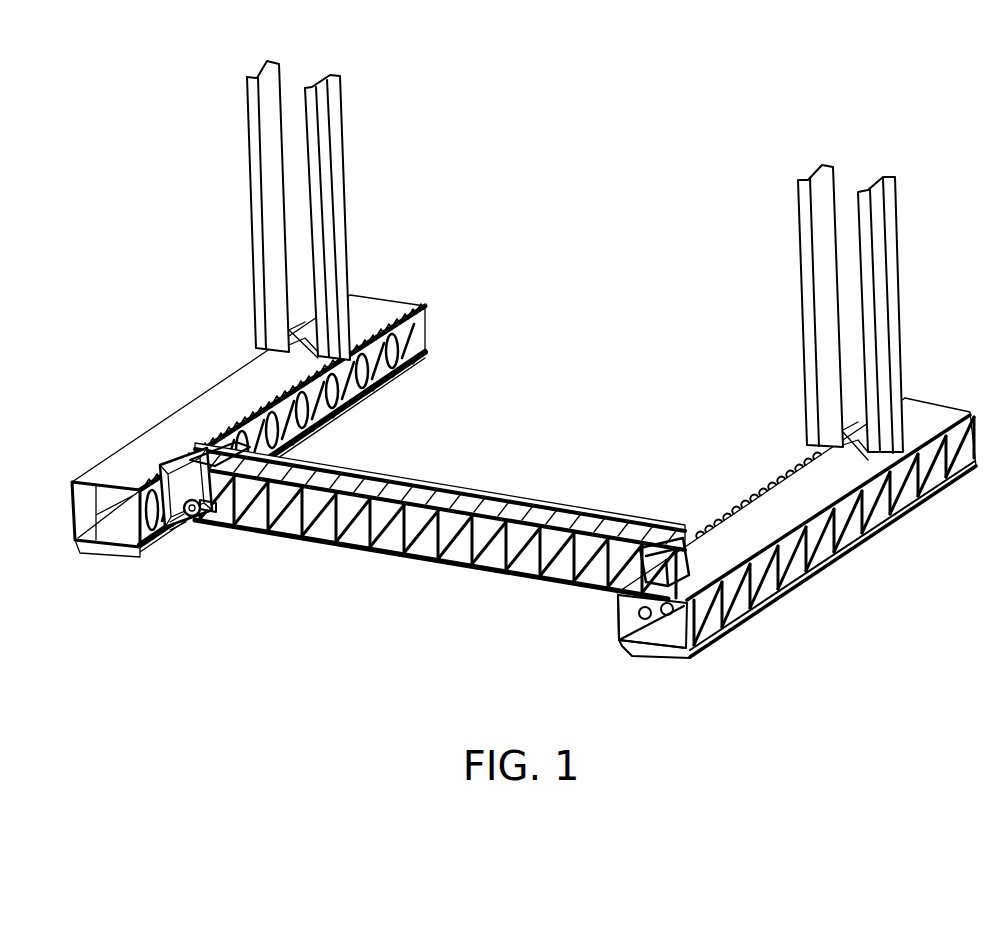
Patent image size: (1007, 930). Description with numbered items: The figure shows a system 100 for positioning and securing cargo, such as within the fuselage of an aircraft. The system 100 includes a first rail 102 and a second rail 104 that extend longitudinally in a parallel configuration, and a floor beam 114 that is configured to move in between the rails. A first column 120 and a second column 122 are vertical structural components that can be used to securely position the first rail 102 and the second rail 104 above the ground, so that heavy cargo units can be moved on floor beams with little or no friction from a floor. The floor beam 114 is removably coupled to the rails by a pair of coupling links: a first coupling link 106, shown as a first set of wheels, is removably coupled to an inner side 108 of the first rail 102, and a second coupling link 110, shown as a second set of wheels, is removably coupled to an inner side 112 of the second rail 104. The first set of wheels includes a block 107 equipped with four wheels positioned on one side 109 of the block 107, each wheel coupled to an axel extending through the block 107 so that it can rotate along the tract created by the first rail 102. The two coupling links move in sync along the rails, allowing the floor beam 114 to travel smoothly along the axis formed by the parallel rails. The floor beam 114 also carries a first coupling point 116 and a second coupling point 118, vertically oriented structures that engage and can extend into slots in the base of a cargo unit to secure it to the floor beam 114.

The system 100 is at (650, 140).
The first rail 102 is at (410, 307).
The second rail 104 is at (780, 470).
The first coupling link 106 is at (173, 538).
The block 107 is at (207, 508).
The inner side of the first rail 108 is at (345, 392).
The side of the block 109 is at (178, 463).
The second coupling link 110 is at (617, 593).
The inner side of the second rail 112 is at (725, 500).
The floor beam 114 is at (407, 472).
The first coupling point 116 is at (215, 445).
The second coupling point 118 is at (658, 523).
The first column 120 is at (348, 178).
The second column 122 is at (803, 278).